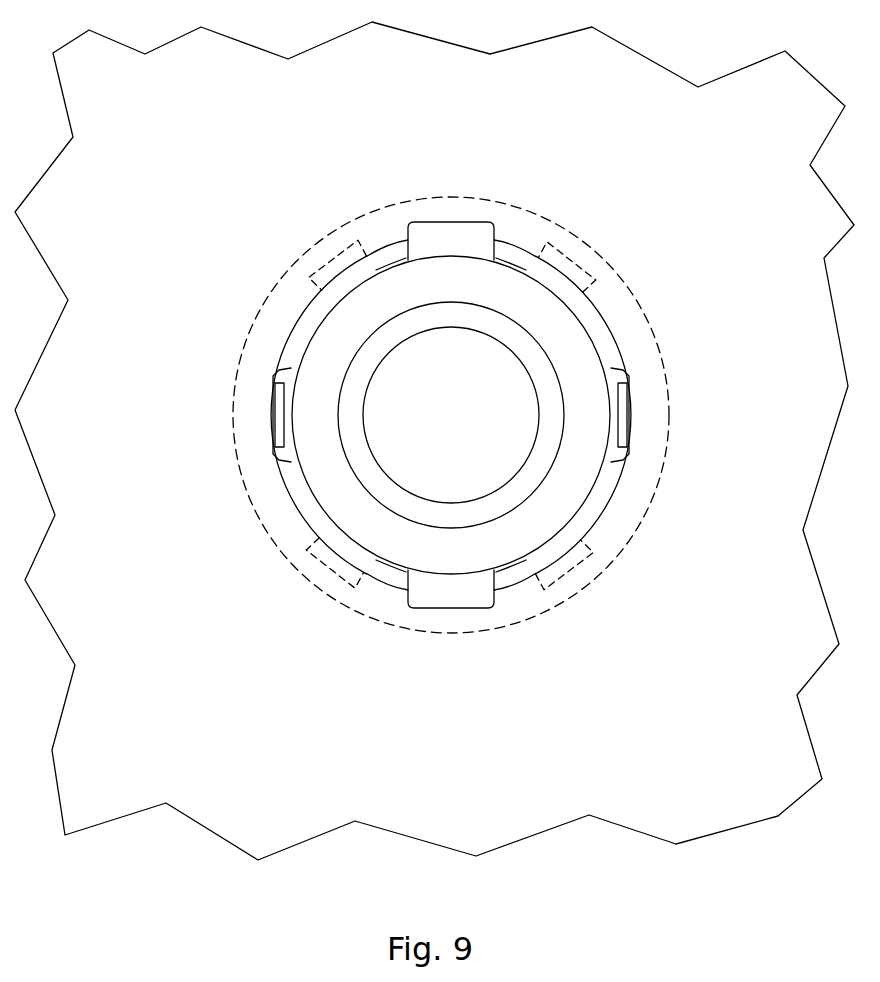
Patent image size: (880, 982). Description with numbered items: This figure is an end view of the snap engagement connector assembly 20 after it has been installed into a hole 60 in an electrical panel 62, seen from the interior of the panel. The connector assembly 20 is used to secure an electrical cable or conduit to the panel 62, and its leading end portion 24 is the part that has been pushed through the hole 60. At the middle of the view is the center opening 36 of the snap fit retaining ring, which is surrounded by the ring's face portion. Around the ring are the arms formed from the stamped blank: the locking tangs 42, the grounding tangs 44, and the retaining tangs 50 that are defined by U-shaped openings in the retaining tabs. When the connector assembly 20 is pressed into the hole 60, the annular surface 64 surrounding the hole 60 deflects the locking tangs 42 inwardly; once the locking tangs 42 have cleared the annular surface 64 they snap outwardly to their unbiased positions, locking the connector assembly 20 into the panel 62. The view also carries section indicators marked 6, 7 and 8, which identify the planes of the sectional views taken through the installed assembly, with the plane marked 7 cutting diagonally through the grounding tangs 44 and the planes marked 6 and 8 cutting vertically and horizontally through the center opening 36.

The snap engagement connector assembly 20 is at (625, 548).
The leading end portion 24 is at (508, 572).
The center opening 36 is at (419, 395).
The locking tangs 42 is at (419, 255).
The grounding tangs 44 is at (597, 268).
The retaining tangs 50 is at (272, 415).
The hole 60 is at (385, 255).
The electrical panel 62 is at (760, 126).
The annular surface 64 is at (517, 253).
The section line 6- 6 is at (393, 436).
The section line 7- 7 is at (406, 379).
The section line 8- 8 is at (451, 358).